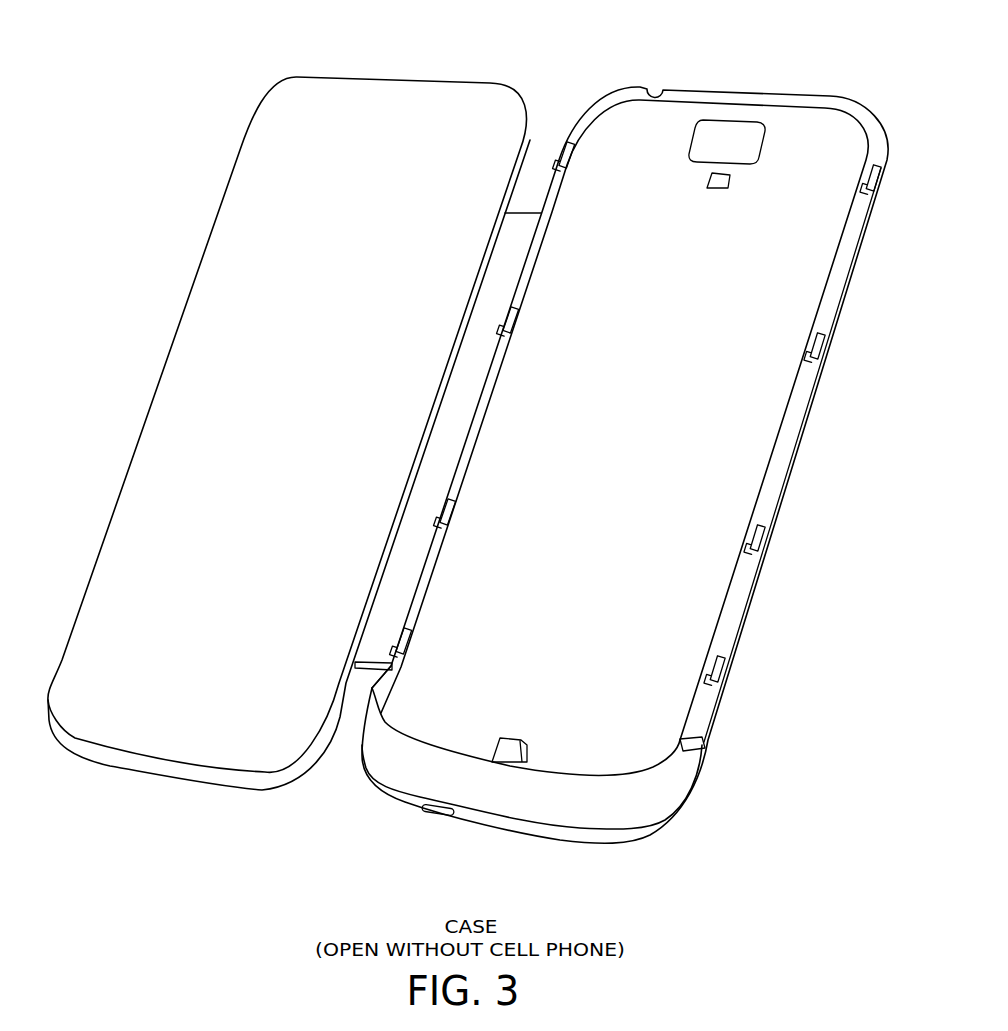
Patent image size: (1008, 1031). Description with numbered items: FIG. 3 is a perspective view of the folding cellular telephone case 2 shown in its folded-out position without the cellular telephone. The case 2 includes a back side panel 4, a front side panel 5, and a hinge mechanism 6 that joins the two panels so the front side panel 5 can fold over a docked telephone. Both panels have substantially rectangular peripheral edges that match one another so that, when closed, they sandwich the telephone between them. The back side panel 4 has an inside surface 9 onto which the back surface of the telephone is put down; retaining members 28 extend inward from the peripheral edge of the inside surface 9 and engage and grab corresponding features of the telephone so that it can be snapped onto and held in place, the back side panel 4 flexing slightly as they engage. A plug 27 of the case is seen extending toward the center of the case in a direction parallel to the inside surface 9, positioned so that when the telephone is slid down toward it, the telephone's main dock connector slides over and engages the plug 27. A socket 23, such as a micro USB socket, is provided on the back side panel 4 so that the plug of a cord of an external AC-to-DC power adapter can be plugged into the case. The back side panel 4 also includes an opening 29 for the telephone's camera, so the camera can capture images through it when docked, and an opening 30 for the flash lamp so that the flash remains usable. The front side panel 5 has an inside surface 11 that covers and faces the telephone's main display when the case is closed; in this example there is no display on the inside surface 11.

The folding cellular telephone case 2 is at (531, 43).
The back side panel 4 is at (625, 476).
The front side panel 5 is at (289, 433).
The hinge mechanism 6 is at (483, 318).
The inside surface of the back side panel 9 is at (614, 460).
The inside surface of the front side panel 11 is at (254, 305).
The socket 23 is at (437, 817).
The plug 27 is at (513, 738).
The retaining members 28 is at (572, 157).
The opening for the camera 29 is at (739, 148).
The opening for the flash lamp 30 is at (718, 190).